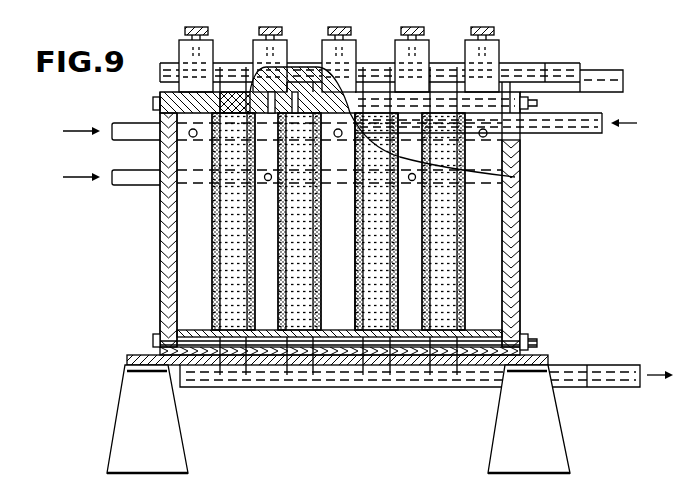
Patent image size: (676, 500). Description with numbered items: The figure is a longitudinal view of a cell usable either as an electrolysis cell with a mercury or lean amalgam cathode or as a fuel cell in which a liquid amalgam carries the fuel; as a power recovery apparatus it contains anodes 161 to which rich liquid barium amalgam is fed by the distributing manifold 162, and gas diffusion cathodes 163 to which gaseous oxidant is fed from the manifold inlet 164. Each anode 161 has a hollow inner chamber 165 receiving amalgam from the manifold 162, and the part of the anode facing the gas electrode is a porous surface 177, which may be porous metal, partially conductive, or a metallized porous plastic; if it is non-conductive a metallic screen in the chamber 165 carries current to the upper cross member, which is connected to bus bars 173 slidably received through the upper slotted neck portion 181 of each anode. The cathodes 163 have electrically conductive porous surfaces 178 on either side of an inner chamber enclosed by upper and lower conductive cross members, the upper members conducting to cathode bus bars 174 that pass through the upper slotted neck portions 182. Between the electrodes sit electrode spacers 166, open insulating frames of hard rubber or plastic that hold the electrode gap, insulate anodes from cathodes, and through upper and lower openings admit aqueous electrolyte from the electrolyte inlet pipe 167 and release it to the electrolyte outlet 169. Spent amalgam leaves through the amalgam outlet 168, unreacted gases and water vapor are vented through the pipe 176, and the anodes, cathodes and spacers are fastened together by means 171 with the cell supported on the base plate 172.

The anodes 161 is at (167, 153).
The distributing manifold 162 is at (126, 123).
The gas diffusion cathodes 163 is at (250, 245).
The manifold inlet 164 is at (127, 177).
The hollow inner chamber 165 is at (485, 237).
The electrode spacers 166 is at (373, 90).
The electrolyte inlet pipe 167 is at (585, 133).
The amalgam outlet 168 is at (568, 365).
The electrolyte outlet 169 is at (625, 387).
The fastening means 171 is at (537, 103).
The base plate 172 is at (133, 355).
The bus bars 173 is at (526, 63).
The cathode bus bars 174 is at (566, 63).
The pipe 176 is at (606, 70).
The porous surface 177 is at (357, 240).
The electrically conductive porous surfaces 178 is at (393, 237).
The upper slotted neck portion 181 is at (177, 45).
The upper slotted neck portions 182 is at (285, 42).